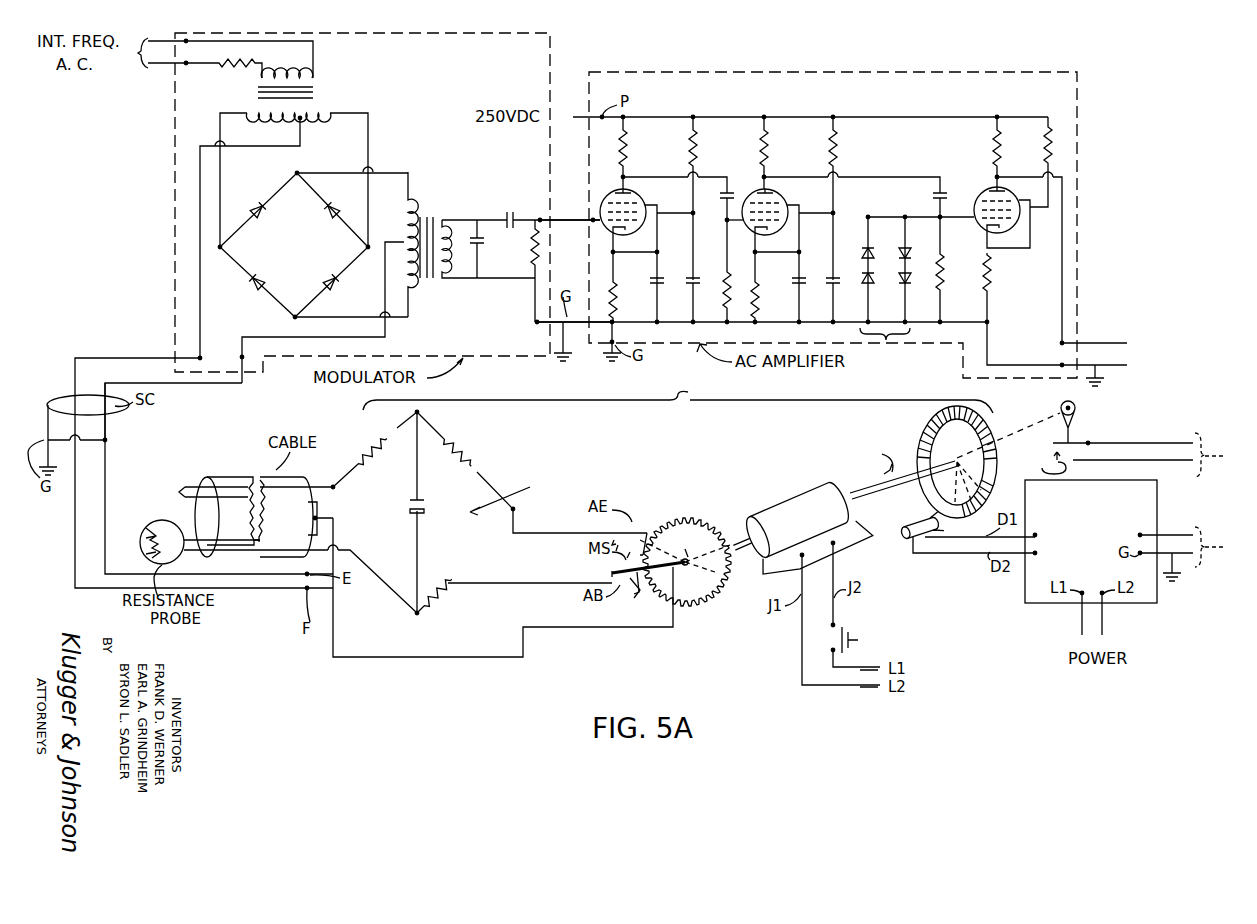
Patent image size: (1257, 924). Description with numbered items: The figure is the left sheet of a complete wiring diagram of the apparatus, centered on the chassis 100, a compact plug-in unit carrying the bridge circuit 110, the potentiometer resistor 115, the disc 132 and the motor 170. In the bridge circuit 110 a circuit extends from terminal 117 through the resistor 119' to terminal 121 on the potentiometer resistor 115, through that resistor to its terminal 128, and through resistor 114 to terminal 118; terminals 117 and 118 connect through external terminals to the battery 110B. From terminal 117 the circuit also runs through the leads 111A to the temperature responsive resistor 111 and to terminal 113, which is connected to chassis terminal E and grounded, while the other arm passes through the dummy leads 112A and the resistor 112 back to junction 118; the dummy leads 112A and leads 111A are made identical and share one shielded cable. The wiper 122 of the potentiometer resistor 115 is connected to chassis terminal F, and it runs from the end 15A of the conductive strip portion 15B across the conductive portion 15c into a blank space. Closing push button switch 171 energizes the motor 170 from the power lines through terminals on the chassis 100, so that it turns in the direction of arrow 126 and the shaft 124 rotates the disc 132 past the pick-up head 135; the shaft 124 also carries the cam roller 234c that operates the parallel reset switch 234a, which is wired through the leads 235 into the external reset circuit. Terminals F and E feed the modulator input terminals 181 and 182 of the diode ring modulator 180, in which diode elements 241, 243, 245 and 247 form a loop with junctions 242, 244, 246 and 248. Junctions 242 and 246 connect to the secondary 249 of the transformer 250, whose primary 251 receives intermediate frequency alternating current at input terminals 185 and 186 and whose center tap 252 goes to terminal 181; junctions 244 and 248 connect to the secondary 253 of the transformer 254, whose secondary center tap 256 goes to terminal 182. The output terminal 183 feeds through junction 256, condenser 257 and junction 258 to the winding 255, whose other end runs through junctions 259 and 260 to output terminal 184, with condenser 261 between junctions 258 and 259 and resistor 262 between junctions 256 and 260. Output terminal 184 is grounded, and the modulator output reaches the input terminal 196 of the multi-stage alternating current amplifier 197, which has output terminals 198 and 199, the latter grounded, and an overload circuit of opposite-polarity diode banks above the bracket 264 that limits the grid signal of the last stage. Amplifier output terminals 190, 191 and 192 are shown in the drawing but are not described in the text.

The modulator 180 is at (557, 41).
The input terminal 185 is at (230, 58).
The input terminal 186 is at (205, 71).
The primary 251 is at (306, 72).
The transformer 250 is at (312, 84).
The secondary 249 is at (325, 111).
The center tap 252 is at (300, 118).
The junction 244 is at (297, 173).
The diode element 243 is at (257, 223).
The diode element 245 is at (320, 223).
The junction 242 is at (220, 247).
The junction 246 is at (368, 247).
The diode element 241 is at (261, 283).
The diode element 247 is at (338, 288).
The junction 248 is at (295, 317).
The secondary center tap 256 is at (402, 230).
The secondary 253 is at (434, 234).
The transformer 254 is at (433, 280).
The primary 255 is at (445, 280).
The junction 258 is at (476, 220).
The condenser 257 is at (509, 211).
The output terminal 183 is at (538, 218).
The condenser 261 is at (476, 240).
The junction 259 is at (528, 275).
The junction 260 is at (537, 270).
The resistor 262 is at (534, 304).
The output terminal 184 is at (538, 324).
The modulator input terminal 181 is at (200, 358).
The modulator input terminal 182 is at (242, 357).
The alternating current amplifier 197 is at (744, 66).
The input terminal 196 is at (612, 322).
The output terminal 198 is at (1060, 345).
The output terminal 199 is at (1060, 365).
The bracket 264 is at (903, 351).
The chassis 100 is at (678, 395).
The terminal 118 is at (418, 412).
The resistor 112 is at (352, 455).
The resistor 114 is at (476, 464).
The bridge circuit 110 is at (518, 495).
The battery 110B is at (408, 510).
The dummy leads 112A is at (235, 506).
The terminal 113 is at (318, 518).
The temperature responsive resistor 111 is at (152, 528).
The leads 111A is at (240, 558).
The terminal 117 is at (416, 617).
The resistor 119' is at (514, 596).
The terminal 128 is at (636, 523).
The potentiometer resistor 115 is at (697, 506).
The conductive portion 15c is at (685, 544).
The wiper 122 is at (694, 549).
The end 15A is at (610, 572).
The conductive strip portion 15B is at (674, 574).
The terminal 121 is at (644, 602).
The motor 170 is at (777, 515).
The push button switch 171 is at (858, 639).
The disc 132 is at (919, 440).
The arrow 126 is at (876, 459).
The shaft 124 is at (878, 494).
The cam roller 234c is at (1070, 432).
The reset switch 234a is at (1099, 463).
The leads 235 is at (1150, 443).
The pick-up head 135 is at (914, 537).
The amplifier output terminal 190 is at (1140, 535).
The amplifier input terminal 191 is at (1035, 535).
The amplifier input terminal 192 is at (1035, 553).